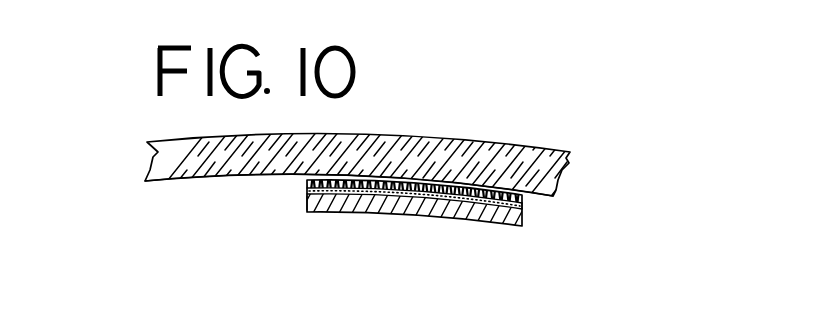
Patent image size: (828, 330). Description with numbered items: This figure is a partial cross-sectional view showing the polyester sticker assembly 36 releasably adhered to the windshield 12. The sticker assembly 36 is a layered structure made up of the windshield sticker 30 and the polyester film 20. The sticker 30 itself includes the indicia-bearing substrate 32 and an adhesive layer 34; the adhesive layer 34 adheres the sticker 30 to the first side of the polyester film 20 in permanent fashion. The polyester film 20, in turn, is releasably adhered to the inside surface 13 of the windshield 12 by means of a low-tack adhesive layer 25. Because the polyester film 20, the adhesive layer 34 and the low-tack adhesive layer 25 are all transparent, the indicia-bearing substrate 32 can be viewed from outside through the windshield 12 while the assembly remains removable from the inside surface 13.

The windshield 12 is at (561, 169).
The inside surface 13 is at (187, 183).
The polyester film 20 is at (523, 201).
The low-tack adhesive layer 25 is at (313, 181).
The windshield sticker 30 is at (453, 201).
The indicia-bearing substrate 32 is at (496, 222).
The adhesive layer 34 is at (524, 206).
The sticker assembly 36 is at (306, 201).